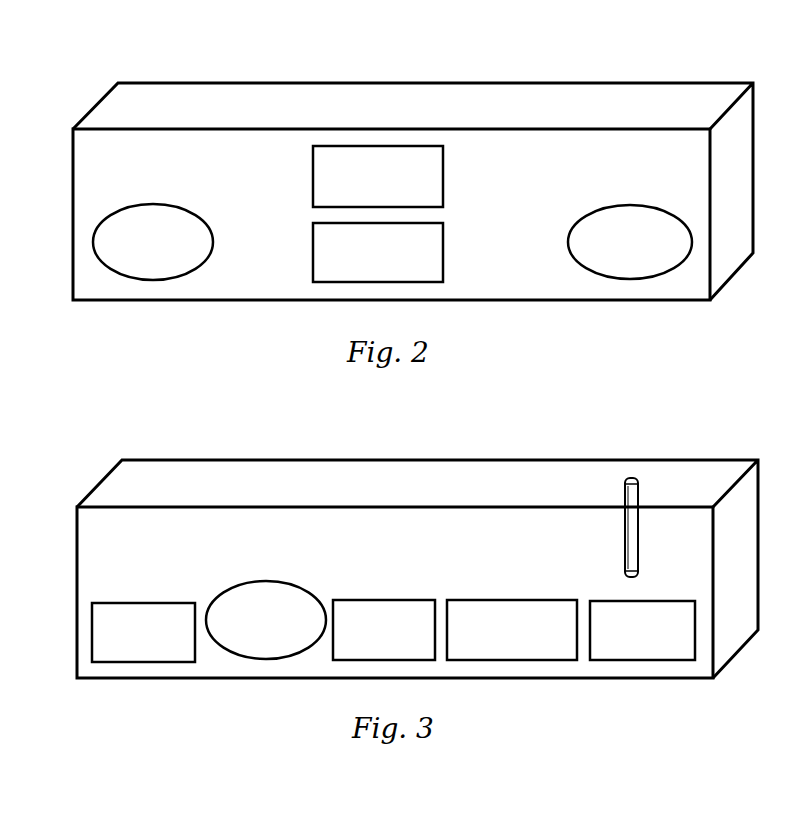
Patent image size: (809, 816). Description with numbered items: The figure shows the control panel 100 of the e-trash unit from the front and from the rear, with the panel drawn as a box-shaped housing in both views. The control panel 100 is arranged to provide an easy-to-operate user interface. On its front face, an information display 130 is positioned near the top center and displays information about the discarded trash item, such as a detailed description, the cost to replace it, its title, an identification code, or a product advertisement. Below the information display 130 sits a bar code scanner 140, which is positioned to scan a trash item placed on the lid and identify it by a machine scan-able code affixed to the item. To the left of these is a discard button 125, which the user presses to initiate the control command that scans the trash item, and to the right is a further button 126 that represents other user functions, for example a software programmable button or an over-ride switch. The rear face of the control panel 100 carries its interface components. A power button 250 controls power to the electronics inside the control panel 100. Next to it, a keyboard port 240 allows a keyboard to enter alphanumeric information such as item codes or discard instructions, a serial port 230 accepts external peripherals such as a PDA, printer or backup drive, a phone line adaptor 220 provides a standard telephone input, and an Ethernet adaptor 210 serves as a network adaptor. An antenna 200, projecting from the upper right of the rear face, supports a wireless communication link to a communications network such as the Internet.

In FIG. 2, the control panel 100 is at (232, 79).
In FIG. 3, the control panel 100 is at (236, 457).
In FIG. 2, the discard button 125 is at (195, 268).
In FIG. 2, the button 126 is at (638, 278).
In FIG. 2, the information display 130 is at (361, 146).
In FIG. 2, the bar code scanner 140 is at (443, 276).
In FIG. 3, the antenna 200 is at (631, 478).
In FIG. 3, the Ethernet adaptor 210 is at (660, 660).
In FIG. 3, the phone line adaptor 220 is at (500, 660).
In FIG. 3, the serial port 230 is at (345, 660).
In FIG. 3, the keyboard port 240 is at (242, 650).
In FIG. 3, the power button 250 is at (127, 662).